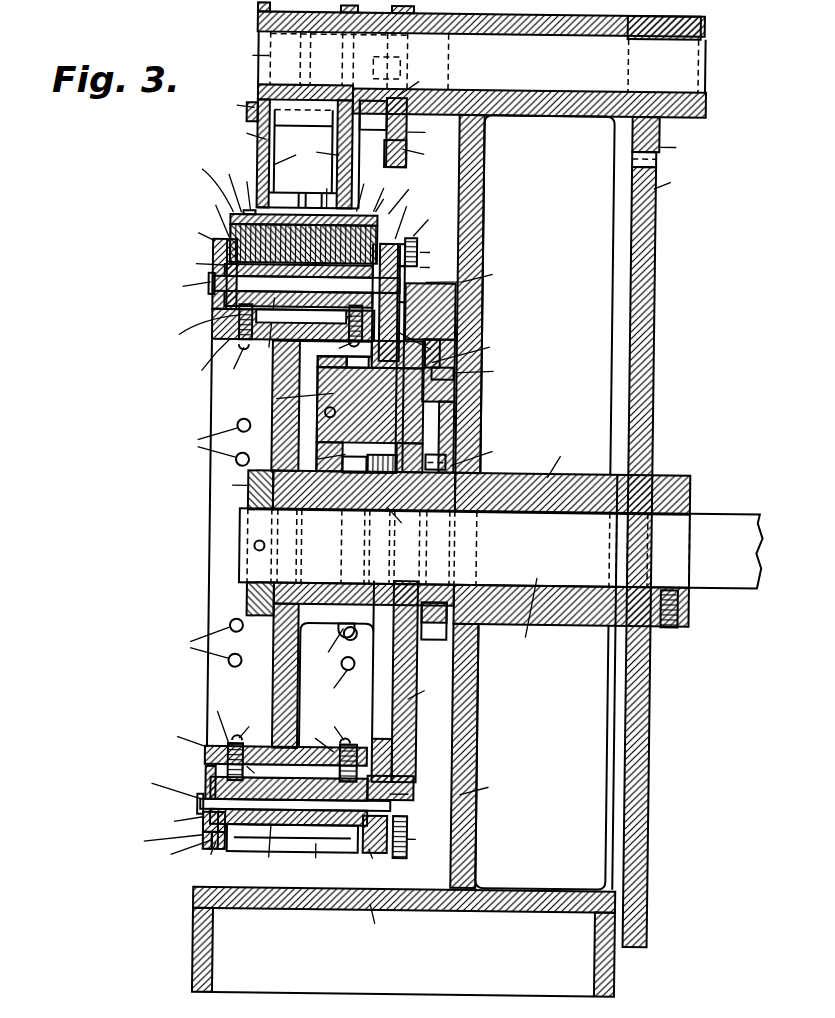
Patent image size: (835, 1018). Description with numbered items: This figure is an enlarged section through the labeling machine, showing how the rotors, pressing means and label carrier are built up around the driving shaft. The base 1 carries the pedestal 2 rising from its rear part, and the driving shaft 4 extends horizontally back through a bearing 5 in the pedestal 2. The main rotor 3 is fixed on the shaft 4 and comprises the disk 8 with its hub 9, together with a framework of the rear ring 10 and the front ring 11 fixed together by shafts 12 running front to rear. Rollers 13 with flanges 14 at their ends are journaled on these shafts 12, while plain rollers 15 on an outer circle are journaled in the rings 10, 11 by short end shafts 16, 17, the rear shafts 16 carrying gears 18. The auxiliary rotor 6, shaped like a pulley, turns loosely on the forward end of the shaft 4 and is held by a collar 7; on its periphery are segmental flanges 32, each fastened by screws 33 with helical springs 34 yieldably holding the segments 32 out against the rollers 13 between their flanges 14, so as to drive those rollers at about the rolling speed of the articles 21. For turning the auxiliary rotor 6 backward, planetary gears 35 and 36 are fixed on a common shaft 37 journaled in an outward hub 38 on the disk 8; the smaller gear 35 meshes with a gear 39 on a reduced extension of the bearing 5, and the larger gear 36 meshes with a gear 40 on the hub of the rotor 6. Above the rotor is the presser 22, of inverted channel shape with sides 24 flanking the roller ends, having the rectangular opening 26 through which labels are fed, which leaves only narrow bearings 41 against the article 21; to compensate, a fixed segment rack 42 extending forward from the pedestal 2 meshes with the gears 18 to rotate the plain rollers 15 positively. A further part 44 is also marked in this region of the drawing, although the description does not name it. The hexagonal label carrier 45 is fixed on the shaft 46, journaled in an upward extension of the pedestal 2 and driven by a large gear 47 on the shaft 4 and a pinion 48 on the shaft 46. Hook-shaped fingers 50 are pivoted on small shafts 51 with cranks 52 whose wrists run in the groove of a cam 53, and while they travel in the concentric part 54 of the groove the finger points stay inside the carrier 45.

The base 1 is at (403, 942).
The pedestal 2 is at (535, 502).
The main rotor 3 is at (192, 821).
The driving shaft 4 is at (571, 618).
The bearing 5 is at (573, 478).
The auxiliary rotor 6 is at (190, 569).
The collar 7 is at (333, 545).
The disk 8 is at (369, 681).
The hub 9 is at (501, 546).
The rear ring 10 is at (409, 534).
The front ring 11 is at (192, 544).
The shafts 12 is at (263, 549).
The rollers 13 is at (294, 570).
The flanges 14 is at (327, 560).
The plain rollers 15 is at (318, 529).
The rear end shafts 16 is at (393, 534).
The front end shafts 17 is at (177, 519).
The gears 18 is at (423, 532).
The articles 21 is at (319, 189).
The presser 22 is at (295, 191).
The sides 24 is at (305, 210).
The rectangular opening 26 is at (321, 155).
The segmental flanges 32 is at (265, 545).
The screws 33 is at (263, 541).
The helical springs 34 is at (315, 548).
The planetary gear 35 is at (473, 372).
The planetary gear 36 is at (346, 460).
The common shaft 37 is at (339, 413).
The hub 38 is at (469, 353).
The gear 39 is at (468, 540).
The gear 40 is at (329, 647).
The bearings 41 is at (320, 190).
The segment rack 42 is at (455, 370).
The washer 44 is at (201, 273).
The label carrier 45 is at (243, 153).
The shaft 46 is at (468, 53).
The large gear 47 is at (659, 550).
The pinion 48 is at (666, 138).
The hook-shaped fingers 50 is at (304, 152).
The small shafts 51 is at (237, 109).
The cranks 52 is at (530, 91).
The cam 53 is at (404, 121).
The concentric part 54 is at (417, 133).